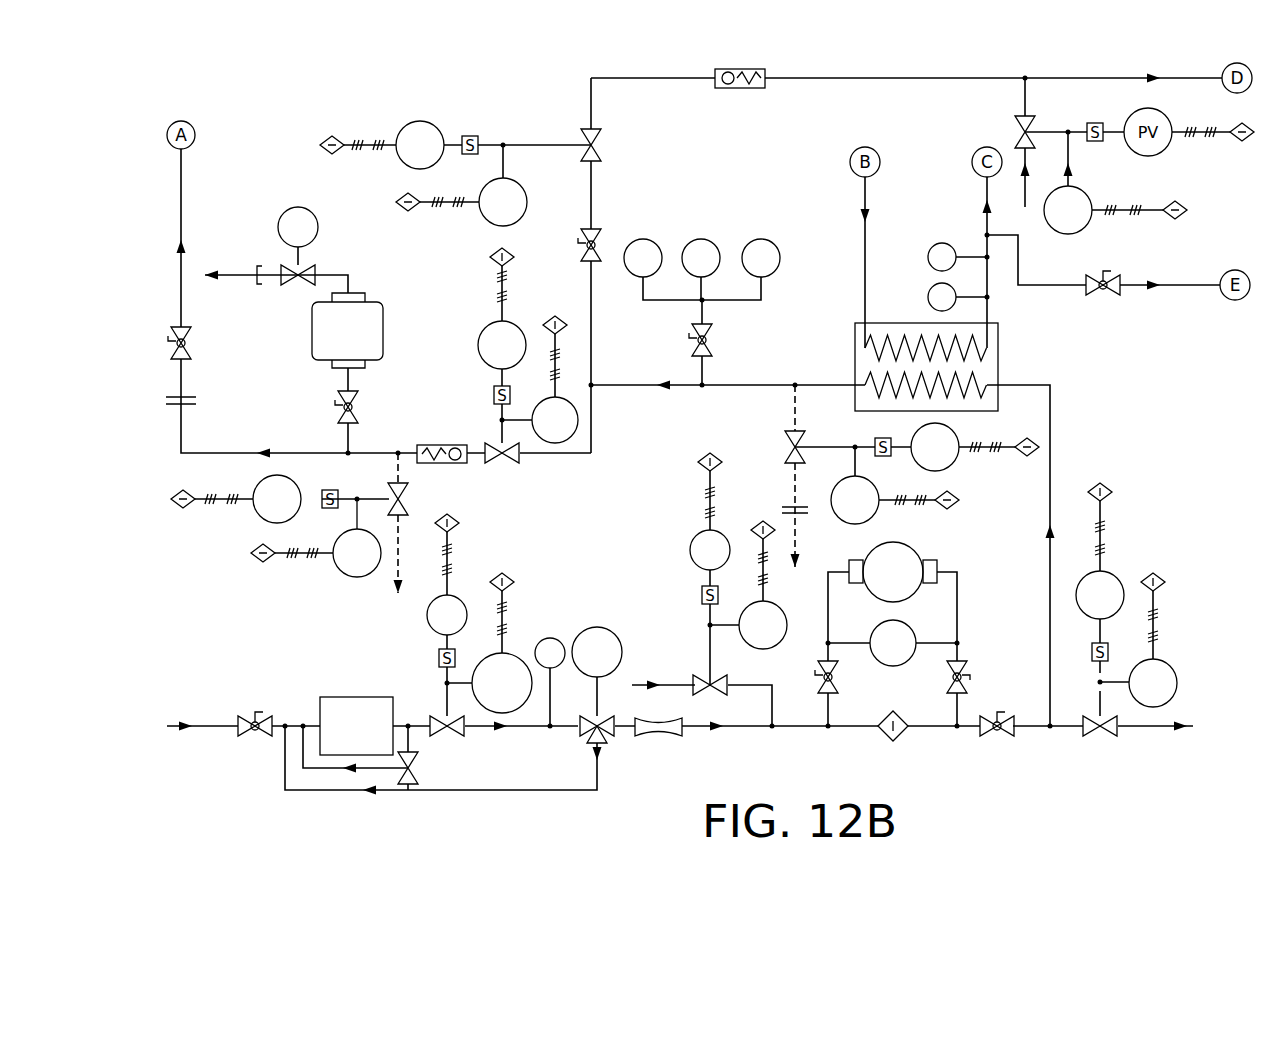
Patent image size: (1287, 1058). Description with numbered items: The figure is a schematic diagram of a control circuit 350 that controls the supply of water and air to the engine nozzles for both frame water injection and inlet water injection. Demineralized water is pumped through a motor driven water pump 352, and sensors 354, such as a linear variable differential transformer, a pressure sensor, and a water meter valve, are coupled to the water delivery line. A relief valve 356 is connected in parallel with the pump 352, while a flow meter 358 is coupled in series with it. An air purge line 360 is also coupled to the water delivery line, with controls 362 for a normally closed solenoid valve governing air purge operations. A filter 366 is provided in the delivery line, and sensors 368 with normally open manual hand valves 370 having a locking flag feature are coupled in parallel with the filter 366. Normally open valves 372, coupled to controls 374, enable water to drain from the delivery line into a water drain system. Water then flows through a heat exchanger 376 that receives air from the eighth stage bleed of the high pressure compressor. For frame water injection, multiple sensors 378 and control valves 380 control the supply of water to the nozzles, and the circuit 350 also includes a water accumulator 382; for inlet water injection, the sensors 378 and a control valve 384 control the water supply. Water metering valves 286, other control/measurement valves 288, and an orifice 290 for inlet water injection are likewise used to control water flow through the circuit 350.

The control circuit 350 is at (262, 90).
The water metering valves 286 is at (423, 121).
The control/measurement valves 288 is at (480, 228).
The sensors 378 is at (298, 207).
The control valve 384 is at (745, 90).
The control valves 380 is at (190, 352).
The orifice 290 is at (192, 412).
The water accumulator 382 is at (333, 343).
The normally open valves 372 is at (408, 501).
The controls 374 is at (258, 520).
The sensors 354 is at (427, 615).
The water pump 352 is at (337, 697).
The relief valve 356 is at (420, 767).
The flow meter 358 is at (642, 735).
The air purge line 360 is at (757, 688).
The controls 362 is at (690, 552).
The filter 366 is at (882, 737).
The sensors 368 is at (913, 623).
The valves 370 is at (945, 683).
The heat exchanger 376 is at (1000, 367).